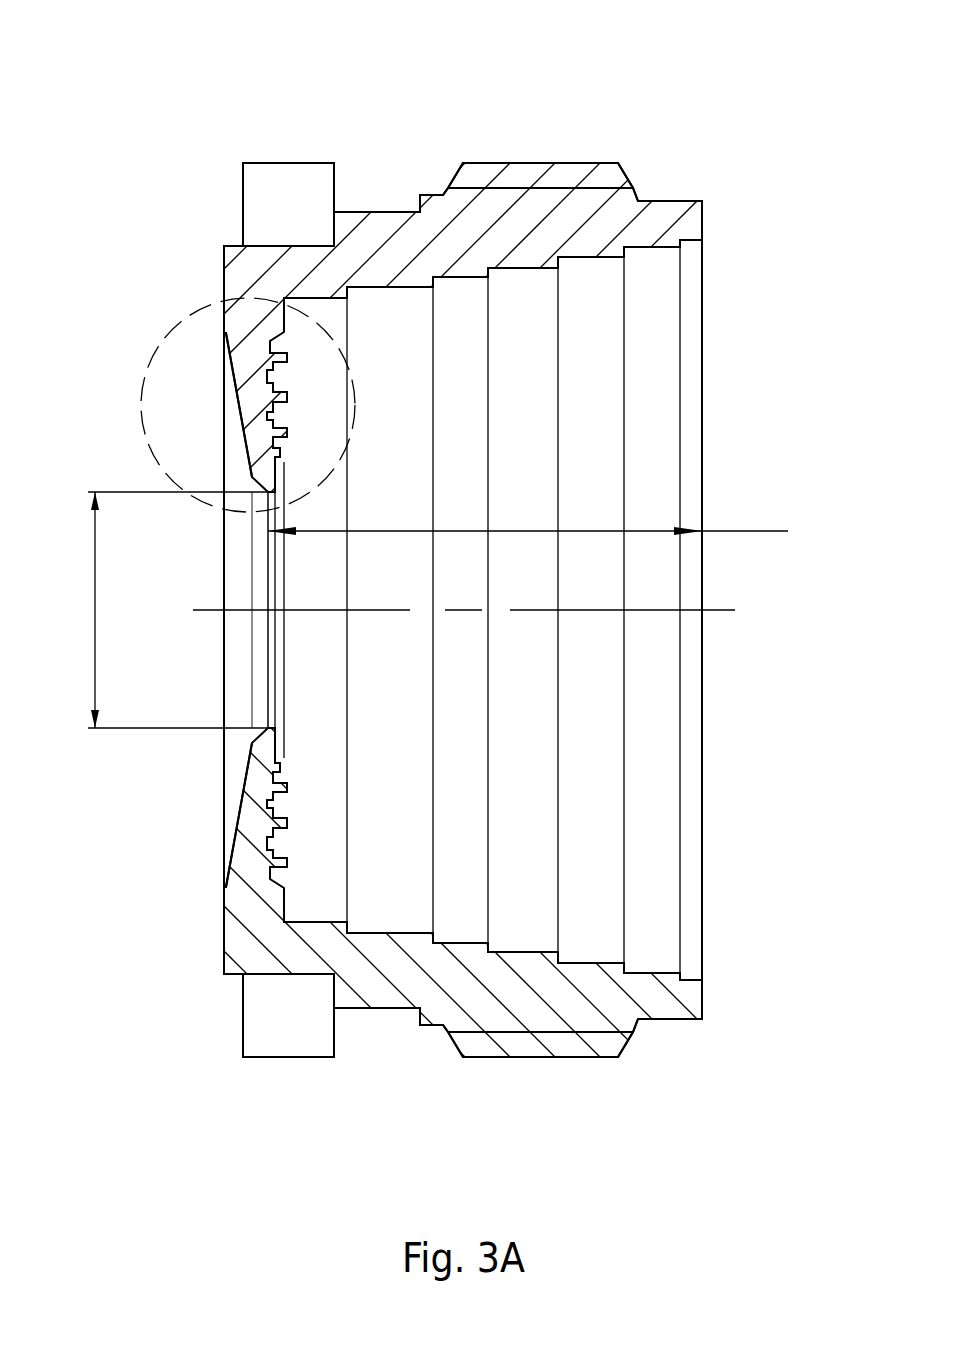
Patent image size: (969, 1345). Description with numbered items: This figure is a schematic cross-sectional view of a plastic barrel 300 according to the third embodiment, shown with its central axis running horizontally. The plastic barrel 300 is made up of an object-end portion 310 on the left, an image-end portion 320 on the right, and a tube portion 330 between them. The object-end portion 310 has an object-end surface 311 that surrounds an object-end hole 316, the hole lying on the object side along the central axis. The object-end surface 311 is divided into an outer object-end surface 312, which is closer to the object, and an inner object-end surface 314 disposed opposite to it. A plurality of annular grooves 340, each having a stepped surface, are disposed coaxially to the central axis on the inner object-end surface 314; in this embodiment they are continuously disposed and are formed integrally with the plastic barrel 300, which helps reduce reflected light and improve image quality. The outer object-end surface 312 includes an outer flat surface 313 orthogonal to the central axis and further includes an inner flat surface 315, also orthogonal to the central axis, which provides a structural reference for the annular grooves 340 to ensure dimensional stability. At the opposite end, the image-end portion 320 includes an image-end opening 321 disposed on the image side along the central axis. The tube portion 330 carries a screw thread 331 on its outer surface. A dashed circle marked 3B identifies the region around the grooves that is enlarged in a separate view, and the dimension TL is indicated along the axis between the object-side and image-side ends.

The plastic barrel 300 is at (197, 42).
The object-end portion 310 is at (223, 290).
The object-end surface 311 is at (240, 410).
The outer object-end surface 312 is at (233, 810).
The outer flat surface 313 is at (224, 908).
The inner object-end surface 314 is at (285, 328).
The inner flat surface 315 is at (284, 900).
The object-end hole 316 is at (235, 655).
The image-end portion 320 is at (703, 222).
The image-end opening 321 is at (690, 452).
The tube portion 330 is at (672, 201).
The screw thread 331 is at (543, 163).
The annular grooves 340 is at (270, 377).
The enlarged region of FIG. 3B is at (145, 367).
The total track length TL is at (528, 518).